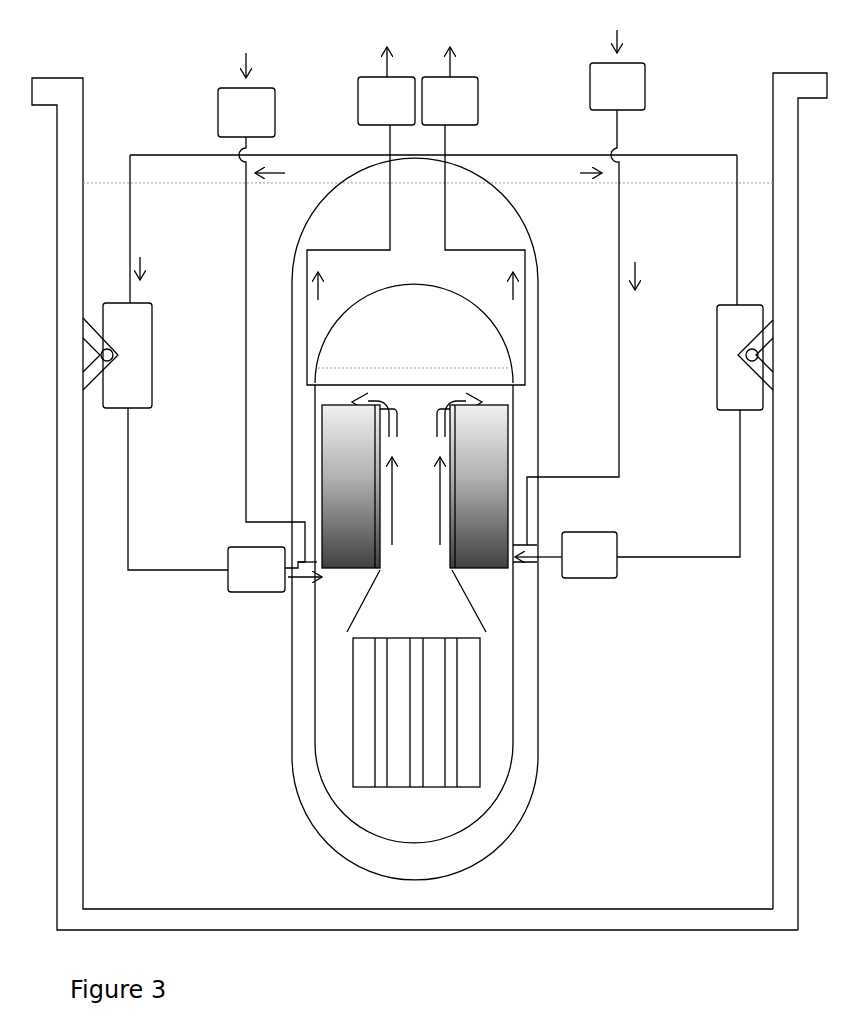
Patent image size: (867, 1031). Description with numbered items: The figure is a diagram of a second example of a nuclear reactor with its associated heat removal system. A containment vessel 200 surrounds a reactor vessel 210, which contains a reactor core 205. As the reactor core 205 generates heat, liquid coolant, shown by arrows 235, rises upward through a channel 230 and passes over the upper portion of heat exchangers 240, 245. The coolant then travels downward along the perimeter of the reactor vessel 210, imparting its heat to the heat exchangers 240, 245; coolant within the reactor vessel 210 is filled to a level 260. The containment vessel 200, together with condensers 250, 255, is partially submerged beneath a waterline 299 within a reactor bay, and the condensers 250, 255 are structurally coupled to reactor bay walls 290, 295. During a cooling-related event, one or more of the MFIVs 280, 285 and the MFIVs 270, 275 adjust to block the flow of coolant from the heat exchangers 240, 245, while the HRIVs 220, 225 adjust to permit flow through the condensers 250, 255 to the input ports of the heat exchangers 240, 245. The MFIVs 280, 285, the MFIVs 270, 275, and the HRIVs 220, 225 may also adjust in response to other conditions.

The containment vessel 200 is at (528, 817).
The reactor core 205 is at (353, 728).
The reactor vessel 210 is at (513, 740).
The HRIV 220 is at (256, 569).
The HRIV 225 is at (577, 555).
The channel 230 is at (416, 544).
The arrows 235 is at (417, 442).
The heat exchanger 240 is at (357, 578).
The heat exchanger 245 is at (485, 580).
The condenser 250 is at (152, 372).
The condenser 255 is at (717, 390).
The level 260 is at (389, 357).
The MFIV 270 is at (261, 310).
The MFIV 275 is at (586, 287).
The MFIV 280 is at (386, 86).
The MFIV 285 is at (450, 86).
The reactor bay wall 290 is at (83, 86).
The reactor bay wall 295 is at (773, 131).
The waterline 299 is at (226, 185).